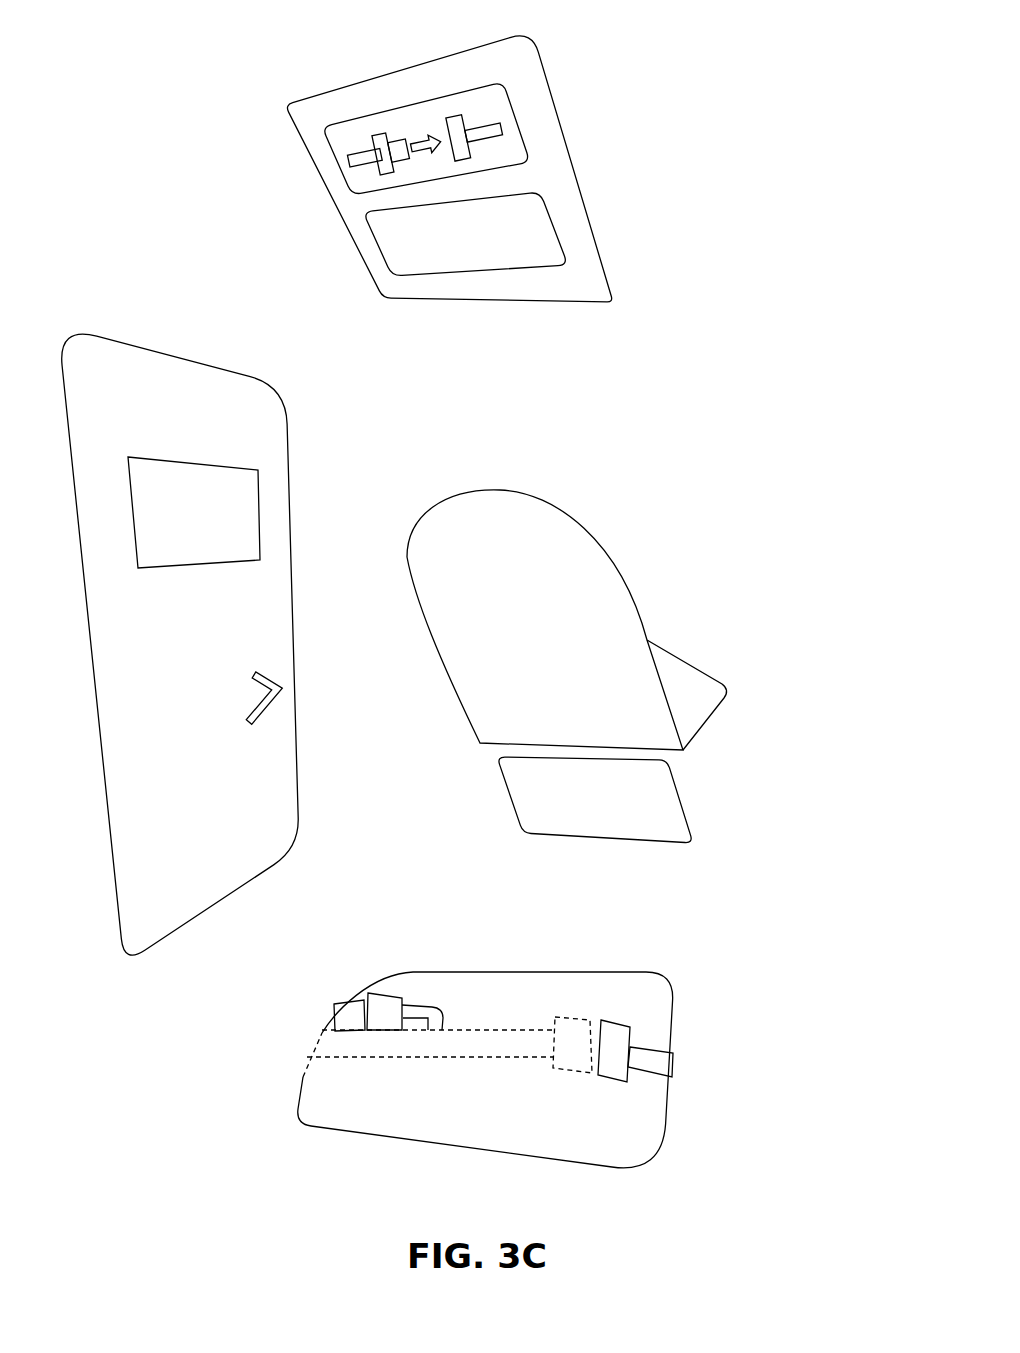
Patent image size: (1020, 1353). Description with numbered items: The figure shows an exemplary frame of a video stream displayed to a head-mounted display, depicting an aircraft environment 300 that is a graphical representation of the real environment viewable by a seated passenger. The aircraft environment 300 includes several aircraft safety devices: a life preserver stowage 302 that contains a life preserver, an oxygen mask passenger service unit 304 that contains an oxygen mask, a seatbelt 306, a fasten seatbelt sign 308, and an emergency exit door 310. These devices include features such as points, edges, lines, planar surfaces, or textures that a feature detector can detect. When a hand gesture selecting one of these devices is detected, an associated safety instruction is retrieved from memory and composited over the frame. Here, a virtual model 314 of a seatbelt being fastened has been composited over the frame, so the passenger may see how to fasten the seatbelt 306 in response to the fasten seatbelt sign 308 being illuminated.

The aircraft environment 300 is at (182, 99).
The life preserver stowage 302 is at (692, 808).
The oxygen mask passenger service unit 304 is at (567, 247).
The seatbelt 306 is at (327, 1023).
The fasten seatbelt sign 308 is at (520, 121).
The emergency exit door 310 is at (297, 475).
The virtual model 314 is at (505, 1027).